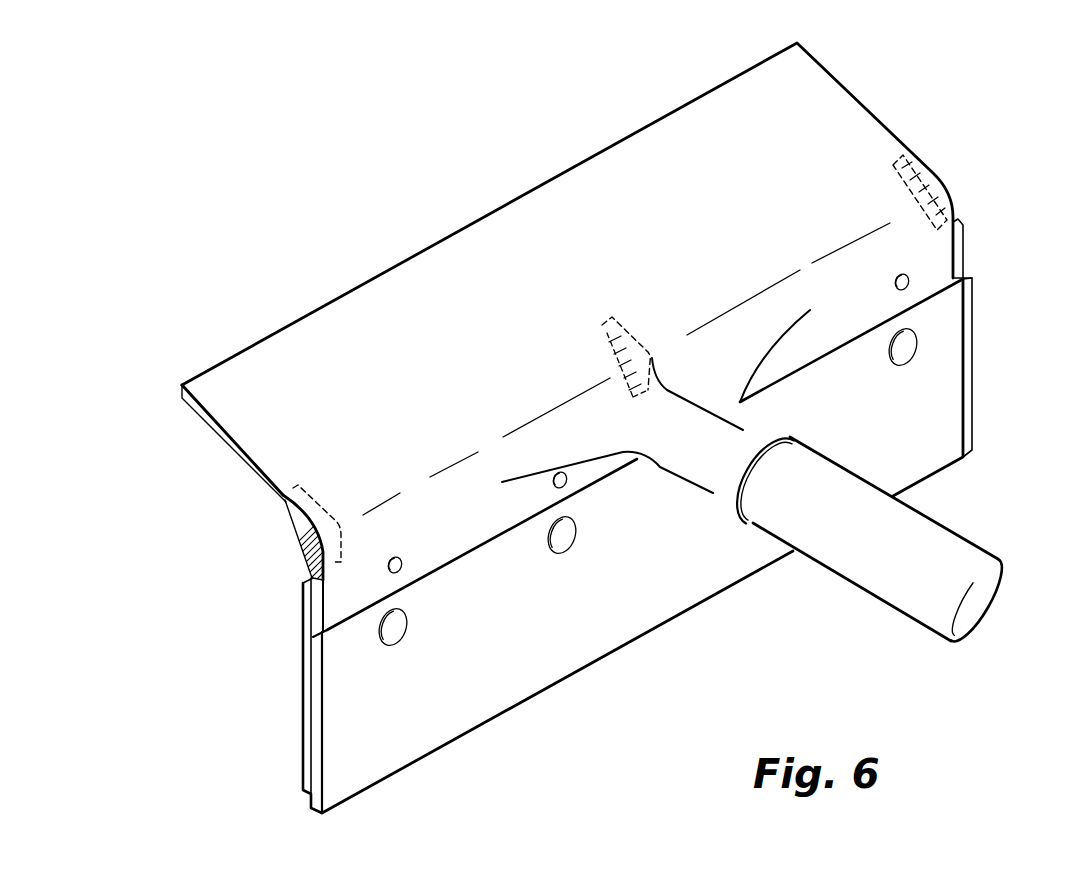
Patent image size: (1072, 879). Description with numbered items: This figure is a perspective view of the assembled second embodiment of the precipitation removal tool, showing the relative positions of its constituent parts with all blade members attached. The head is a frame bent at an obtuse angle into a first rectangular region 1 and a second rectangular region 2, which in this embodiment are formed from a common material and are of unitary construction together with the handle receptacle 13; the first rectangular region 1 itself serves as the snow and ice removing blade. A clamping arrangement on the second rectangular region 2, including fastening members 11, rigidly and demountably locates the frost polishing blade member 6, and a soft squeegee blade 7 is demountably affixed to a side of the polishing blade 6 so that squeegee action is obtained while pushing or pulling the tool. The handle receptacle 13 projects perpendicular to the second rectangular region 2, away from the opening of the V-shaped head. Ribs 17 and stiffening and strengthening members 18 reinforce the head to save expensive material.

The first rectangular region 1 is at (565, 197).
The second rectangular region 2 is at (930, 254).
The frost polishing blade member 6 is at (301, 723).
The squeegee blade 7 is at (943, 411).
The clamping arrangement screws 11 is at (389, 571).
The handle receptacle 13 is at (685, 457).
The ribs 17 is at (297, 533).
The stiffening and strengthening members 18 is at (572, 440).